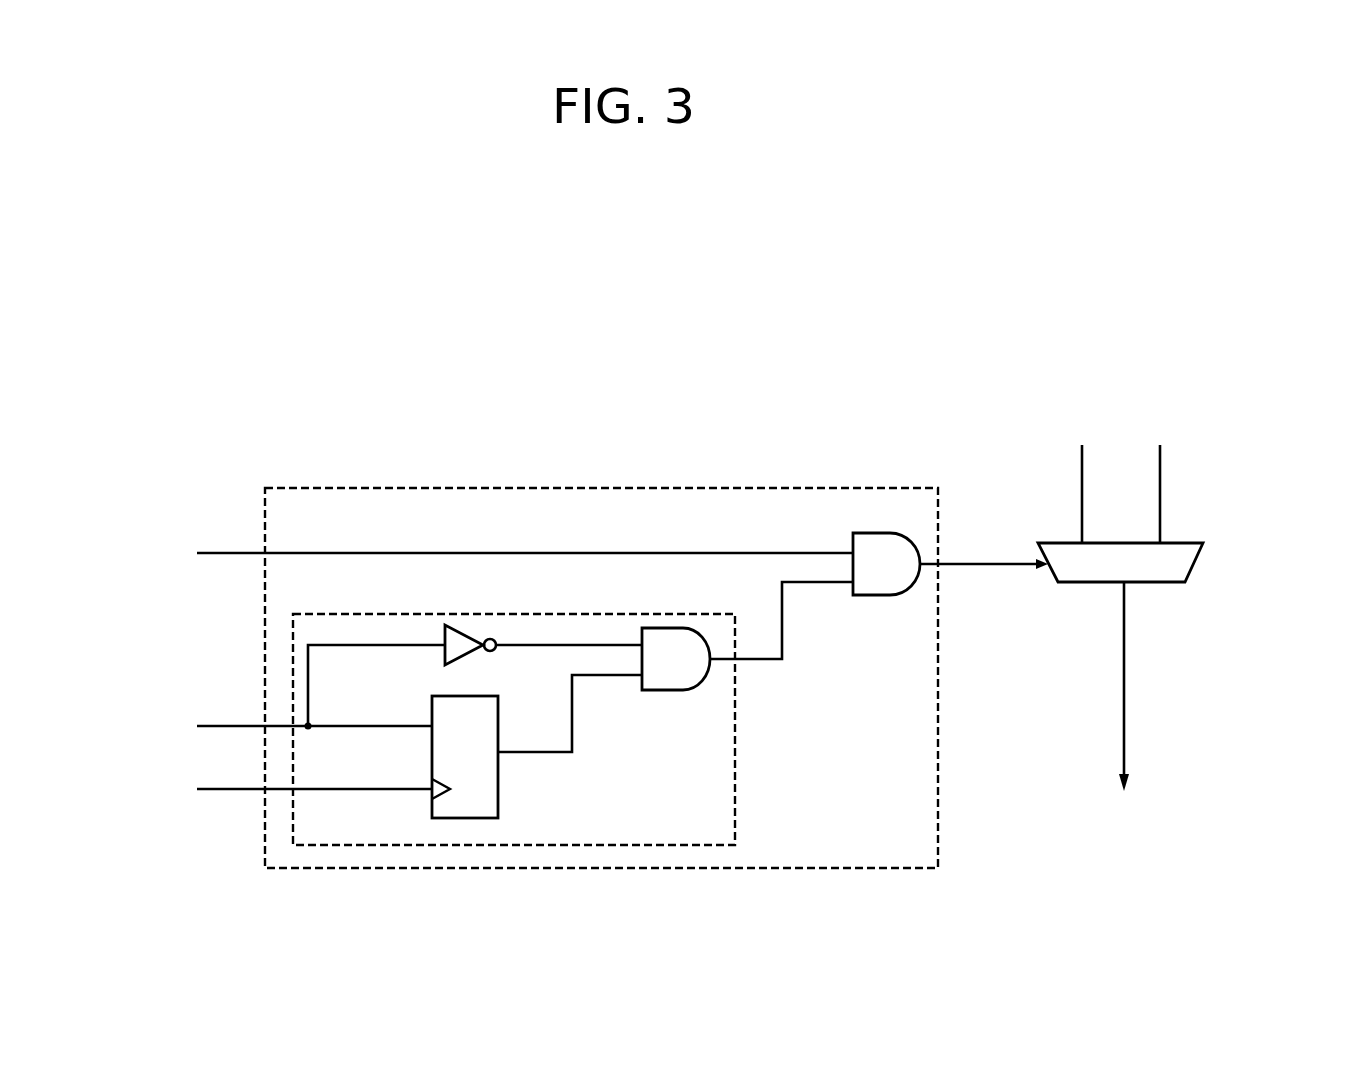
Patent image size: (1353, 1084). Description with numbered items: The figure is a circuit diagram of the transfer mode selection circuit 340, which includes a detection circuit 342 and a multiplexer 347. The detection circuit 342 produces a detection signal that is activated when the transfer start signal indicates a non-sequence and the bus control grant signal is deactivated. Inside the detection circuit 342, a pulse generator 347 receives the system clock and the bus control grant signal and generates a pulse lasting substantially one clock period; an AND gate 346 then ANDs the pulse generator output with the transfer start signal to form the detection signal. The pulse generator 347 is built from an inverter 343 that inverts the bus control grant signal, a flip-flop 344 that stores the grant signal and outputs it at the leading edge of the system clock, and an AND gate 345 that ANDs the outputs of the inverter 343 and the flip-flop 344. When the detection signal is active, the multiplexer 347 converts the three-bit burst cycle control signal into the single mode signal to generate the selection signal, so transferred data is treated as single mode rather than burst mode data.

The transfer mode selection circuit 340 is at (622, 342).
The detection circuit 342 is at (571, 488).
The inverter 343 is at (467, 625).
The flip-flop 344 is at (498, 787).
The AND gate 345 is at (667, 690).
The AND gate 346 is at (873, 595).
The pulse generator / multiplexer 347 is at (735, 789).